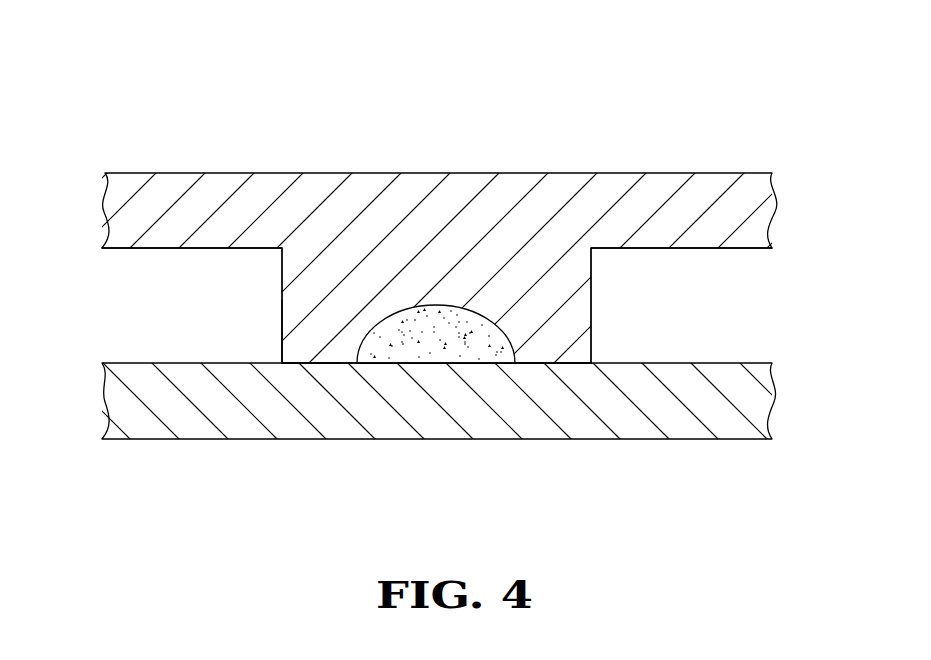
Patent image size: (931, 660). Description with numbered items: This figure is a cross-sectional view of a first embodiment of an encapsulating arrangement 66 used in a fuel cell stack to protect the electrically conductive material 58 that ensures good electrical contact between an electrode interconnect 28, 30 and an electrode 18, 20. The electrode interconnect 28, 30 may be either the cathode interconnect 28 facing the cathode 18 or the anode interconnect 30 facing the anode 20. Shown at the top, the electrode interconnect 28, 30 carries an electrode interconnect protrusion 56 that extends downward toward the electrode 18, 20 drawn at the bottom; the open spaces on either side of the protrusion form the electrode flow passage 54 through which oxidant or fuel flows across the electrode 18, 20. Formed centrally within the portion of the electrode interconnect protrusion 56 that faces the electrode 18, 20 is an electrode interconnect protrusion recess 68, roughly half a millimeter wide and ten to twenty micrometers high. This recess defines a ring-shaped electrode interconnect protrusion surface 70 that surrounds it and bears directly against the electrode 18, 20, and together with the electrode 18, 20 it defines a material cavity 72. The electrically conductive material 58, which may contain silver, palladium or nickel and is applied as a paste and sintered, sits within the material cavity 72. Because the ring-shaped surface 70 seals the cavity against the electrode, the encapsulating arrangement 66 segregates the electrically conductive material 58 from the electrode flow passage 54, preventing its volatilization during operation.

The cathode interconnect 28 is at (465, 202).
The anode interconnect 30 is at (327, 172).
The cathode 18 is at (435, 461).
The anode 20 is at (733, 427).
The electrode flow passage 54 is at (220, 300).
The electrode interconnect protrusion 56 is at (282, 348).
The electrically conductive material 58 is at (403, 425).
The electrode interconnect protrusion recess 68 is at (403, 411).
The material cavity 72 is at (372, 327).
The encapsulating arrangement 66 is at (490, 377).
The electrode interconnect protrusion surface 70 is at (540, 363).